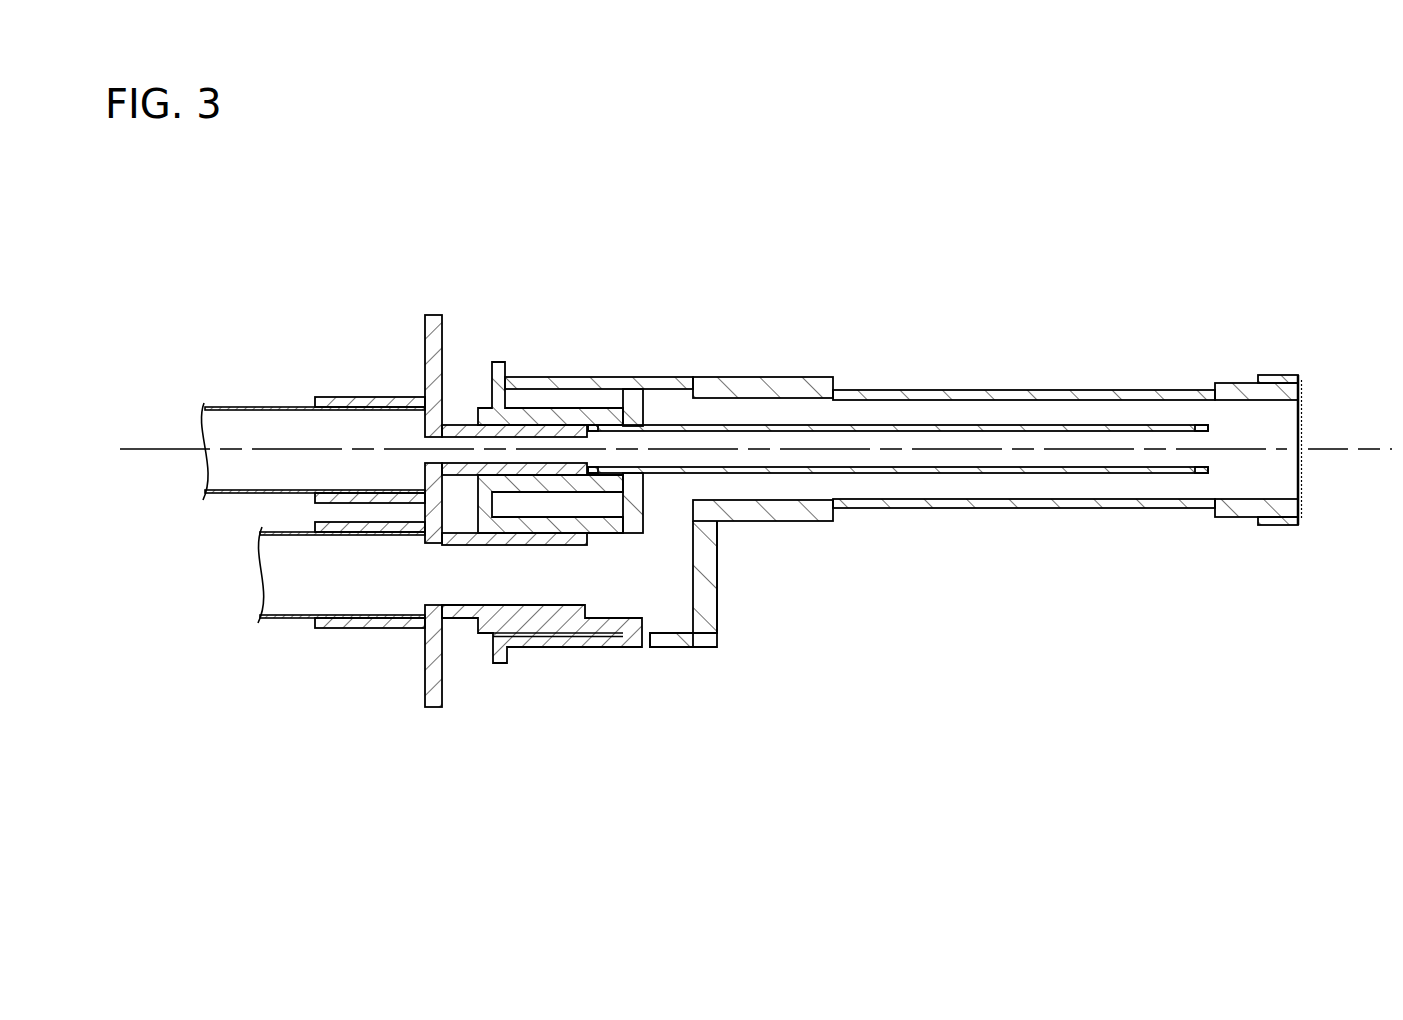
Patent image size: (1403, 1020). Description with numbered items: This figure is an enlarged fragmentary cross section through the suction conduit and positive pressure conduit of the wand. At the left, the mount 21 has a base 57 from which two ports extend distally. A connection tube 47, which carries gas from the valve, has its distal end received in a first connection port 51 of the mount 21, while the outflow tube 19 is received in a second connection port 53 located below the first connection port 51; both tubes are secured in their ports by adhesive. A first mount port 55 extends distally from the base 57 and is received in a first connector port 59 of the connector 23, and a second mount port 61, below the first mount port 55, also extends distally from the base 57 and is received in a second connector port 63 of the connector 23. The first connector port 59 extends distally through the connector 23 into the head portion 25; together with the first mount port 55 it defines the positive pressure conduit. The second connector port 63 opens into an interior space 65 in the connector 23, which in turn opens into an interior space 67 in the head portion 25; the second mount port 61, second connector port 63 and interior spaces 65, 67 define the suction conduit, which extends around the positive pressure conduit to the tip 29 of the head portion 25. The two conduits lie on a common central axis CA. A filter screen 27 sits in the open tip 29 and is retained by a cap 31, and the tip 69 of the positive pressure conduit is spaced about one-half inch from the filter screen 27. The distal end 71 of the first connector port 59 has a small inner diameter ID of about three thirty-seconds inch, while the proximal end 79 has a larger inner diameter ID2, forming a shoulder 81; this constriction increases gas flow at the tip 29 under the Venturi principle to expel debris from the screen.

The outflow tube 19 is at (293, 618).
The mount 21 is at (432, 712).
The connector 23 is at (759, 374).
The head portion 25 is at (1099, 510).
The filter screen 27 is at (1317, 420).
The tip 29 is at (1283, 477).
The cap 31 is at (1281, 525).
The connection tube 47 is at (240, 407).
The first connection port 51 is at (333, 398).
The second connection port 53 is at (357, 629).
The first mount port 55 is at (471, 425).
The base 57 is at (428, 315).
The first connector port 59 is at (534, 410).
The second mount port 61 is at (458, 622).
The second connector port 63 is at (549, 625).
The interior space 65 is at (662, 574).
The interior space 67 is at (1263, 426).
The tip 69 is at (1210, 438).
The distal end 71 is at (889, 426).
The proximal end 79 is at (543, 484).
The shoulder 81 is at (598, 474).
The inner diameter ID is at (986, 370).
The inner diameter ID2 is at (592, 423).
The central axis CA is at (1098, 448).